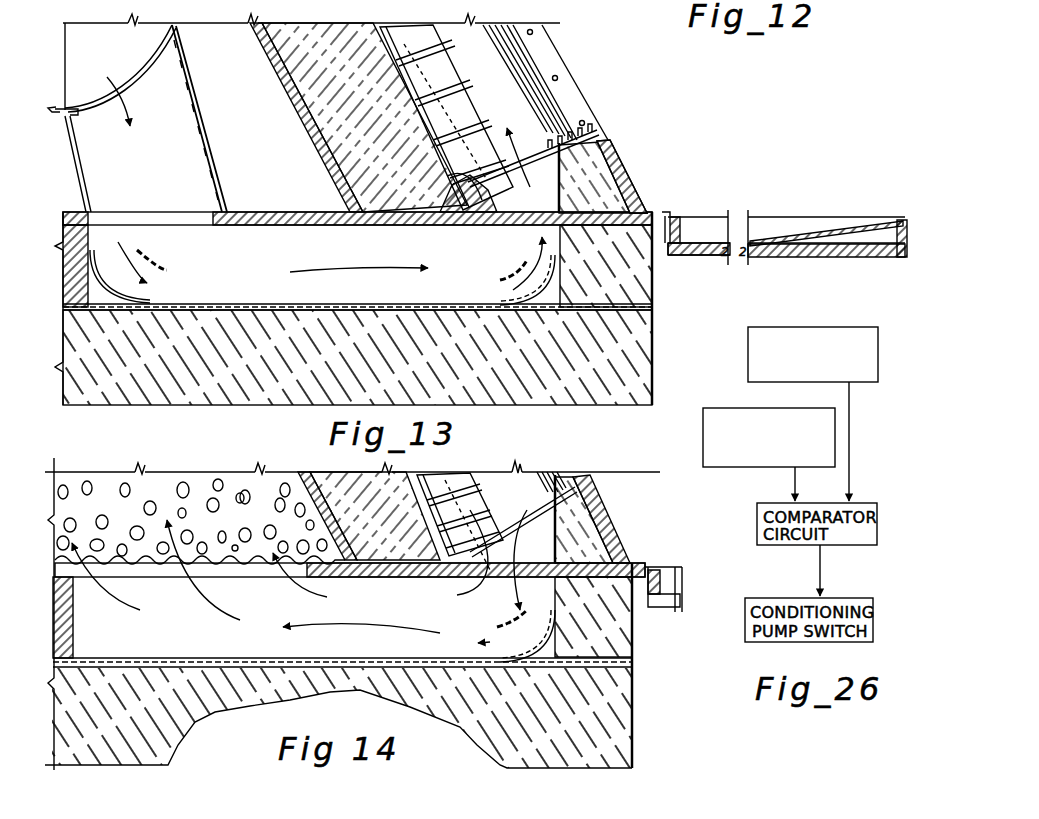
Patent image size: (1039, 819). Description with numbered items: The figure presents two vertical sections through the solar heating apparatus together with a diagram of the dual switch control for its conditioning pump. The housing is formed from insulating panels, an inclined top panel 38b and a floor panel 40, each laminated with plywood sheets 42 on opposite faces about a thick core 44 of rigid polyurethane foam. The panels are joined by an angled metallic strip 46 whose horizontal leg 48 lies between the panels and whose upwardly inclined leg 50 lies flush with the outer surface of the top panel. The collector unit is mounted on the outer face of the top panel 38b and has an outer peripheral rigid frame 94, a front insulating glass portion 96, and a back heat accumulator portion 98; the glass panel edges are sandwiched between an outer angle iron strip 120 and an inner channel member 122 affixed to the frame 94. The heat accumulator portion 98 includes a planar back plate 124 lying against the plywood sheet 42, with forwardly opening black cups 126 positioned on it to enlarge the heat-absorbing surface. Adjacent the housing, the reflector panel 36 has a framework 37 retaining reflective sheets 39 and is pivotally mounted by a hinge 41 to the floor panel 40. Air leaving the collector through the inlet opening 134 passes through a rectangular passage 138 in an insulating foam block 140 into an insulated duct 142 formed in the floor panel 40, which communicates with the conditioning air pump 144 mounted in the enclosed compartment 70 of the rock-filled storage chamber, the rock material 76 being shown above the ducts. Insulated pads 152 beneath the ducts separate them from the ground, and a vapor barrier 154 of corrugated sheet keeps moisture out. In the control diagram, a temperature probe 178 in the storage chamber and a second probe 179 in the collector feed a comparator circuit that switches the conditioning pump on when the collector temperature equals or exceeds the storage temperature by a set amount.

In FIG. 13, the reflector panel 36 is at (770, 222).
In FIG. 14, the reflector panel 36 is at (680, 567).
In FIG. 13, the framework 37 is at (815, 257).
In FIG. 13, the top panel 38b is at (327, 116).
In FIG. 14, the top panel 38b is at (303, 510).
In FIG. 13, the reflective sheets 39 is at (833, 233).
In FIG. 14, the floor panel 40 is at (63, 620).
In FIG. 13, the hinge 41 is at (662, 212).
In FIG. 13, the plywood sheets 42 is at (330, 93).
In FIG. 14, the plywood sheets 42 is at (320, 452).
In FIG. 13, the core 44 is at (327, 154).
In FIG. 14, the core 44 is at (377, 495).
In FIG. 13, the angled metallic strip 46 is at (458, 214).
In FIG. 13, the horizontal leg 48 is at (418, 214).
In FIG. 13, the upwardly inclined leg 50 is at (498, 214).
In FIG. 13, the enclosed compartment 70 is at (283, 222).
In FIG. 14, the particulate material 76 is at (180, 487).
In FIG. 13, the outer peripheral rigid frame 94 is at (580, 120).
In FIG. 14, the outer peripheral rigid frame 94 is at (573, 475).
In FIG. 13, the front insulating glass portion 96 is at (532, 62).
In FIG. 13, the back heat accumulator portion 98 is at (474, 80).
In FIG. 14, the back heat accumulator portion 98 is at (492, 487).
In FIG. 13, the outer angle iron strip 120 is at (543, 147).
In FIG. 13, the inner channel member 122 is at (533, 150).
In FIG. 13, the back plate 124 is at (320, 60).
In FIG. 14, the cups 126 is at (452, 561).
In FIG. 14, the inlet opening 134 is at (594, 551).
In FIG. 13, the rectangular passage 138 is at (603, 147).
In FIG. 14, the rectangular passage 138 is at (562, 532).
In FIG. 13, the insulating foam block 140 is at (592, 188).
In FIG. 14, the insulating foam block 140 is at (567, 580).
In FIG. 13, the insulated duct 142 is at (476, 295).
In FIG. 14, the insulated duct 142 is at (600, 657).
In FIG. 13, the conditioning air pump 144 is at (153, 53).
In FIG. 13, the insulated pads 152 is at (640, 357).
In FIG. 14, the insulated pads 152 is at (160, 750).
In FIG. 13, the vapor barrier 154 is at (655, 316).
In FIG. 14, the vapor barrier 154 is at (634, 700).
In FIG. 26, the probe 178 is at (866, 357).
In FIG. 26, the probe 179 is at (752, 452).